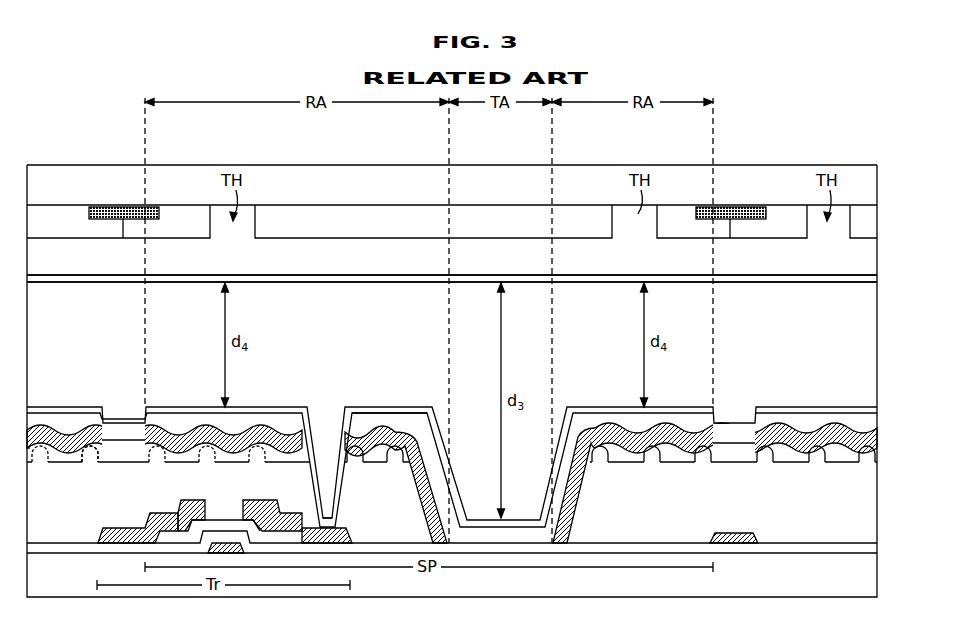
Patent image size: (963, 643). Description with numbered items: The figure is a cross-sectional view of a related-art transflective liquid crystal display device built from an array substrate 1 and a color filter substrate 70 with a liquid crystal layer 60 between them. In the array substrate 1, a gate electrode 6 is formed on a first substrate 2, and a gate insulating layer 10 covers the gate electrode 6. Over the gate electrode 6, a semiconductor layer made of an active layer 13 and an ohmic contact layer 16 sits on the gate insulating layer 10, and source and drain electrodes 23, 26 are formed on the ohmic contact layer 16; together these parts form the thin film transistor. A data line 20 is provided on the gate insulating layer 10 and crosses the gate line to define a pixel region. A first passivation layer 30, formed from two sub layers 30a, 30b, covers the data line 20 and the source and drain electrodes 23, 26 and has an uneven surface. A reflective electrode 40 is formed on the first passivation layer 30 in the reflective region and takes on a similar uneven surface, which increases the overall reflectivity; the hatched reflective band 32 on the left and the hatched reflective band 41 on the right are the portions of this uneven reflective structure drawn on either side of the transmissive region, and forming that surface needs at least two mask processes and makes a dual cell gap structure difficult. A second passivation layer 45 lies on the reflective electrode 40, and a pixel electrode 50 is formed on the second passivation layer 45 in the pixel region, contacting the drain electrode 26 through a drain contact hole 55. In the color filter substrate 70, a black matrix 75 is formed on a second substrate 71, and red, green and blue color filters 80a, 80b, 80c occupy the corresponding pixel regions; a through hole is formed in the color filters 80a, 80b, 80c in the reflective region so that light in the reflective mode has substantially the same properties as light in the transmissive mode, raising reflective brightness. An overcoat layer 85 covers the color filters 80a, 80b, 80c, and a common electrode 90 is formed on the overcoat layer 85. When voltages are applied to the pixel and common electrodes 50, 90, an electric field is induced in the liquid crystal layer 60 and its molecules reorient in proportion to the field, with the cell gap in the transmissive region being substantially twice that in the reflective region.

The array substrate 1 is at (878, 412).
The first substrate 2 is at (589, 592).
The gate electrode 6 is at (228, 553).
The gate insulating layer 10 is at (625, 543).
The active layer 13 is at (223, 520).
The ohmic contact layer 16 is at (276, 500).
The data line 20 is at (729, 533).
The source electrode 23 is at (155, 513).
The drain electrode 26 is at (347, 527).
The first passivation layer 30 is at (84, 366).
The first sub layer 30a is at (53, 497).
The second sub layer 30b is at (73, 452).
The reflective electrode 32 is at (158, 436).
The reflective electrode 40 is at (277, 440).
The reflective electrode 41 is at (600, 430).
The second passivation layer 45 is at (422, 434).
The pixel electrode 50 is at (396, 412).
The drain contact hole 55 is at (325, 426).
The liquid crystal layer 60 is at (866, 329).
The color filter substrate 70 is at (877, 166).
The second substrate 71 is at (385, 140).
The black matrix 75 is at (733, 207).
The red color filter 80a is at (100, 238).
The green color filter 80b is at (534, 238).
The blue color filter 80c is at (768, 238).
The overcoat layer 85 is at (805, 276).
The common electrode 90 is at (728, 283).